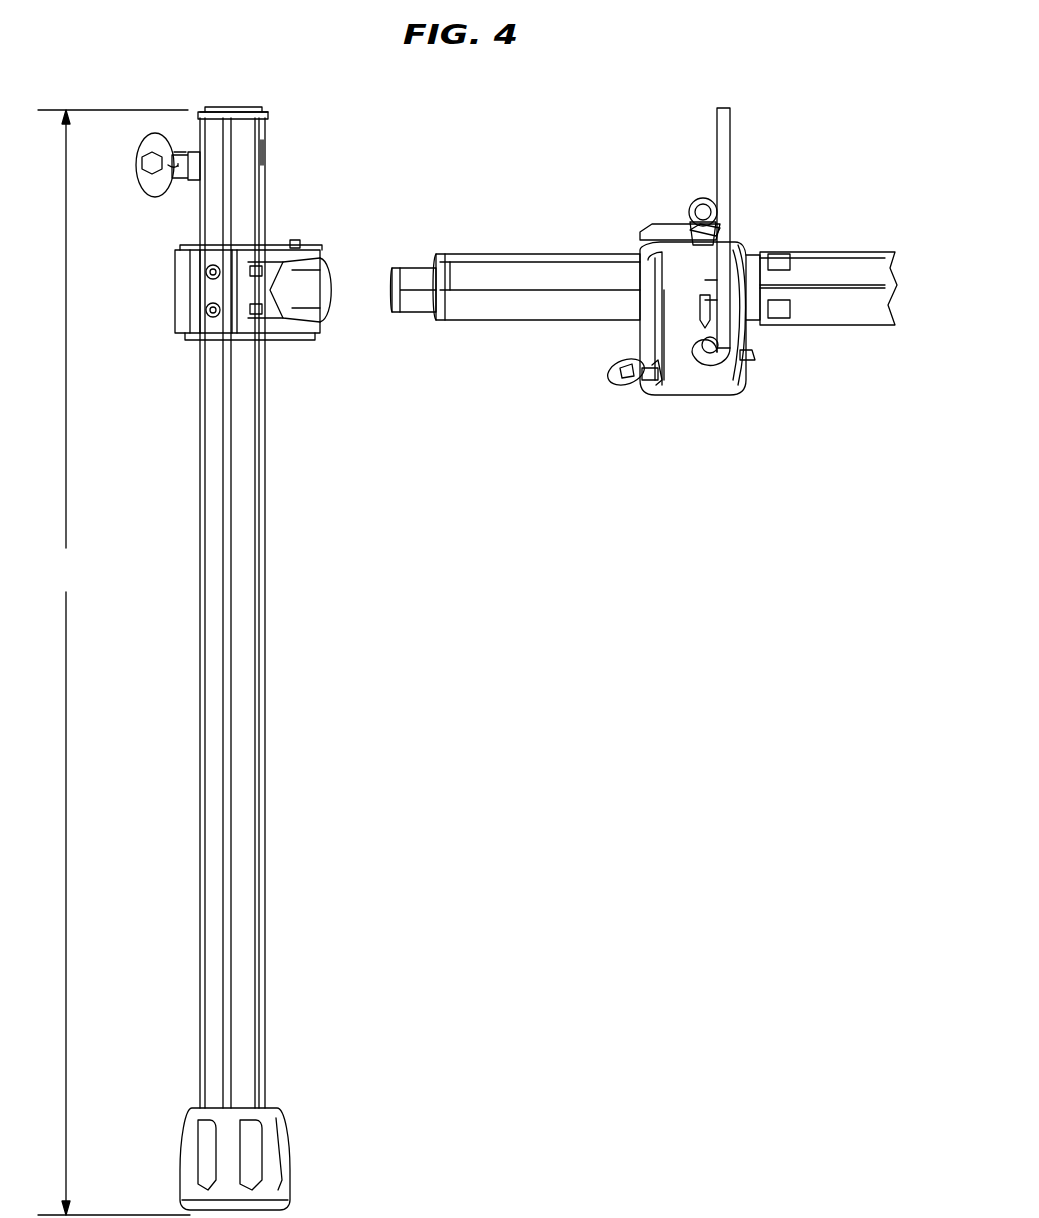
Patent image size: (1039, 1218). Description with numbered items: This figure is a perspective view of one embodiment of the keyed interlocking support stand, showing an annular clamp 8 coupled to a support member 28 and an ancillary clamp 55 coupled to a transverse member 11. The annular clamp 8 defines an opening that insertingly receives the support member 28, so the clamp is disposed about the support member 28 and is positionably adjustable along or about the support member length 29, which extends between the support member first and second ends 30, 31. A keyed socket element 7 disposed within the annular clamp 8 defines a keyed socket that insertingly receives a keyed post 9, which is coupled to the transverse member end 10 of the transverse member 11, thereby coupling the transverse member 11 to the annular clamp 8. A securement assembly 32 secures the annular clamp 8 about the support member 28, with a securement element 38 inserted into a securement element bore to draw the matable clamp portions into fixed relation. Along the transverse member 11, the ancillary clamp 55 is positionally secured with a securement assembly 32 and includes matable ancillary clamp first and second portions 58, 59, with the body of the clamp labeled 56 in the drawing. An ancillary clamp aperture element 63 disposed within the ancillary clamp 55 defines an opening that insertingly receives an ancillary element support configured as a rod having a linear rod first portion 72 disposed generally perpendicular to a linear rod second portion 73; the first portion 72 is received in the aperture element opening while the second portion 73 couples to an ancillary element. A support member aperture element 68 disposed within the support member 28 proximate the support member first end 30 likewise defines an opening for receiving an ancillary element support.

The keyed socket element 7 is at (315, 305).
The annular clamp 8 is at (162, 292).
The keyed post 9 is at (418, 315).
The transverse member end 10 is at (430, 270).
The transverse member 11 is at (530, 305).
The support member 28 is at (245, 661).
The support member length 29 is at (114, 662).
The support member first end 30 is at (243, 130).
The support member second end 31 is at (243, 1108).
The securement assembly 32 is at (213, 310).
The securement element 38 is at (700, 205).
The ancillary clamp 55 is at (750, 380).
The clamp body 56 is at (653, 285).
The ancillary clamp first portion 58 is at (660, 235).
The ancillary clamp second portion 59 is at (674, 396).
The ancillary clamp aperture element 63 is at (682, 360).
The support member aperture element 68 is at (233, 110).
The linear rod first portion 72 is at (712, 362).
The linear rod second portion 73 is at (732, 128).